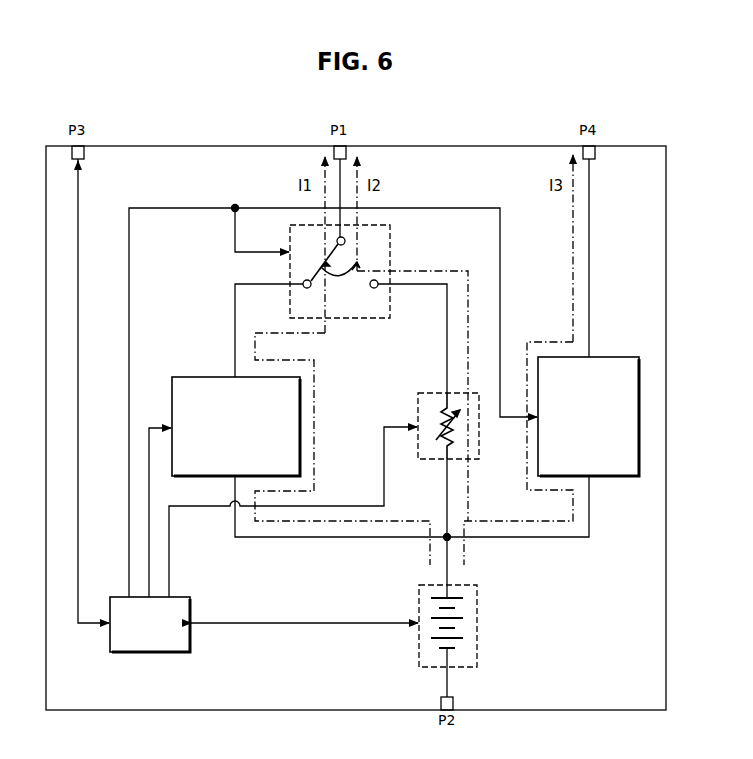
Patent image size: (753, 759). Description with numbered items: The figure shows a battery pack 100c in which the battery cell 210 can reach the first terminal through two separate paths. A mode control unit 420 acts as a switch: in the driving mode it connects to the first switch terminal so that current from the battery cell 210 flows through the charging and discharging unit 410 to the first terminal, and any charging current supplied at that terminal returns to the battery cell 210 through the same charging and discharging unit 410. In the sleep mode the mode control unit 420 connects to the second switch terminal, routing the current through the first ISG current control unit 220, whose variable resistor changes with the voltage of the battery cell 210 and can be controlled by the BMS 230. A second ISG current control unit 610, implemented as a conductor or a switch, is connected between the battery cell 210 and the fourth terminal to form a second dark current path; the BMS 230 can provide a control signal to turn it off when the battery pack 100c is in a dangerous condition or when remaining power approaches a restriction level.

The battery pack 100c is at (462, 147).
The mode control unit 420 is at (391, 247).
The charging and discharging unit 410 is at (212, 377).
The first ISG current control unit 220 is at (432, 393).
The second ISG current control unit 610 is at (612, 357).
The BMS 230 is at (185, 598).
The battery cell 210 is at (478, 601).